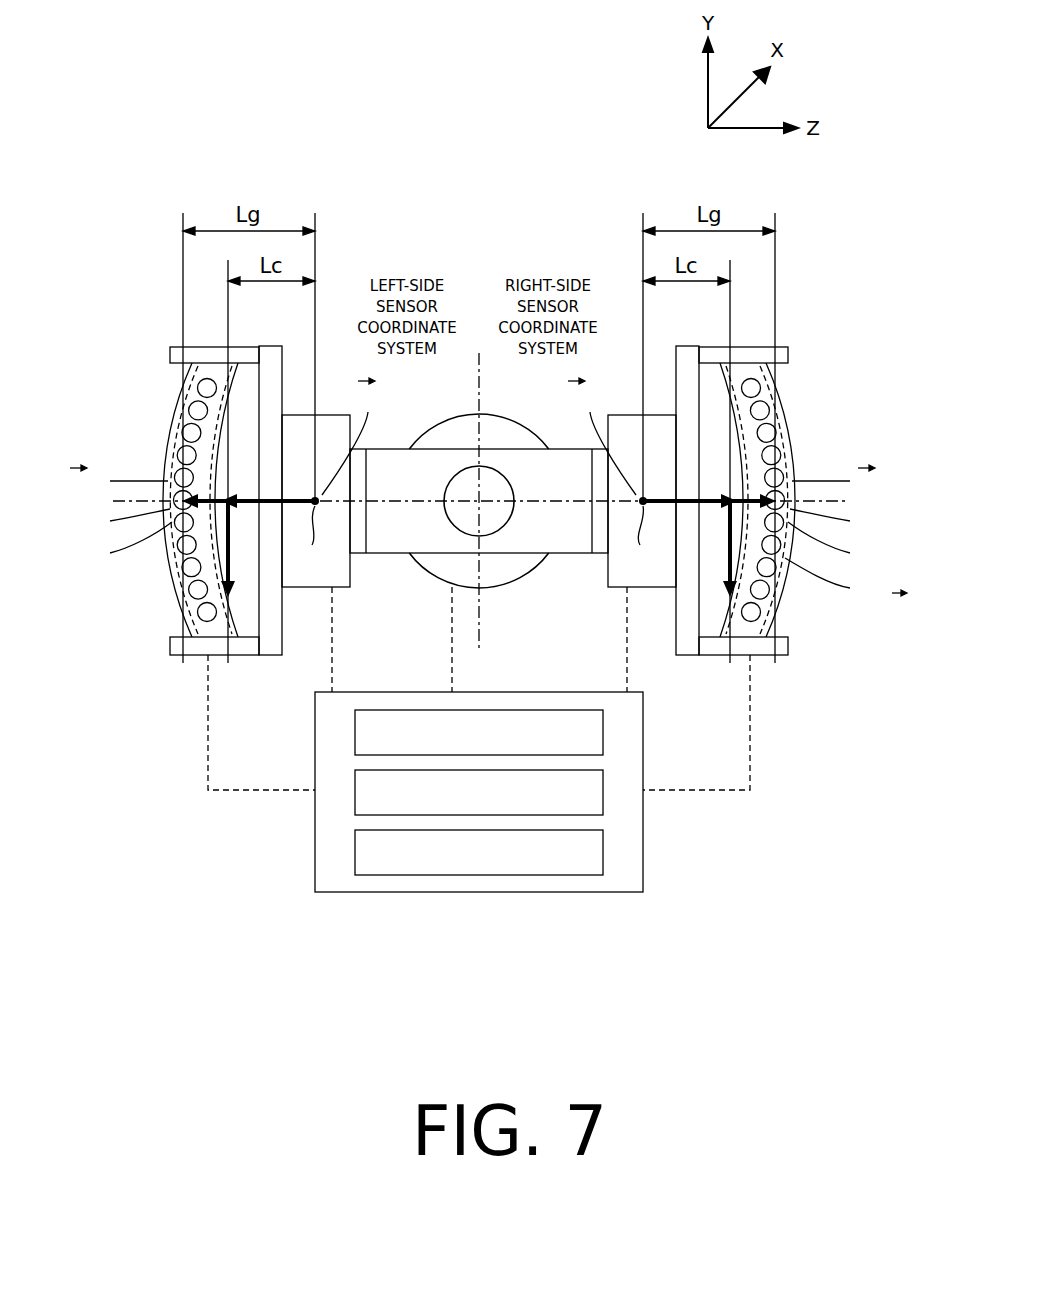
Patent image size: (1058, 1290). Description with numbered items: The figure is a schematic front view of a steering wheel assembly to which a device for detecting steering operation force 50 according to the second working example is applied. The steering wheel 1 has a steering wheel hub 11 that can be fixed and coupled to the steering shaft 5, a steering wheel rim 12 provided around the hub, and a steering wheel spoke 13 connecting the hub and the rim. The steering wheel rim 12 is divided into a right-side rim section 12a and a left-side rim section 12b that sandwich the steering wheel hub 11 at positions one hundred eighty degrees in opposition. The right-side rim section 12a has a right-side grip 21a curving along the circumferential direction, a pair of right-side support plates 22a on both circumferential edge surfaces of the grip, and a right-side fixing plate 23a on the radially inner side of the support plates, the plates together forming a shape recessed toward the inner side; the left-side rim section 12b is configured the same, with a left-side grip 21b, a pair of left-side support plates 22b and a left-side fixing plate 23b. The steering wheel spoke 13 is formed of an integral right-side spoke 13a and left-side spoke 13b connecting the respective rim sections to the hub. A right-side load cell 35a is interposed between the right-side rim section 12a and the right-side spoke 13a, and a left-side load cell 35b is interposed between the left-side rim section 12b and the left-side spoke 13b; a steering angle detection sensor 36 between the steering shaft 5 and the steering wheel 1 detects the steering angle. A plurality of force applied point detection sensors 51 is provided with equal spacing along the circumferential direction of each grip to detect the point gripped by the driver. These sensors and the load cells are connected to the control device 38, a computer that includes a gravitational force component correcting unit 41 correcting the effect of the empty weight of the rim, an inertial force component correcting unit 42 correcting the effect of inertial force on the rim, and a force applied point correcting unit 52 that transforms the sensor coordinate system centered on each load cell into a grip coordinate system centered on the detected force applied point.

The steering wheel 1 is at (534, 150).
The steering shaft 5 is at (490, 413).
The steering wheel hub 11 is at (508, 526).
The steering wheel rim 12 is at (786, 314).
The right-side rim section 12a is at (801, 353).
The left-side rim section 12b is at (158, 353).
The steering wheel spoke 13 is at (404, 574).
The right-side spoke 13a is at (577, 541).
The left-side spoke 13b is at (377, 541).
The right-side grip 21a is at (784, 447).
The left-side grip 21b is at (176, 447).
The right-side support plates 22a is at (782, 372).
The left-side support plates 22b is at (178, 372).
The right-side fixing plate 23a is at (678, 657).
The left-side fixing plate 23b is at (280, 657).
The right-side load cell 35a is at (650, 589).
The left-side load cell 35b is at (308, 589).
The steering angle detection sensor 36 is at (500, 578).
The control device 38 is at (558, 893).
The gravitational force component correcting unit 41 is at (604, 730).
The inertial force component correcting unit 42 is at (604, 797).
The device for detecting steering operation force 50 is at (367, 978).
The force applied point detection sensor 51 is at (190, 601).
The force applied point correcting unit 52 is at (604, 850).